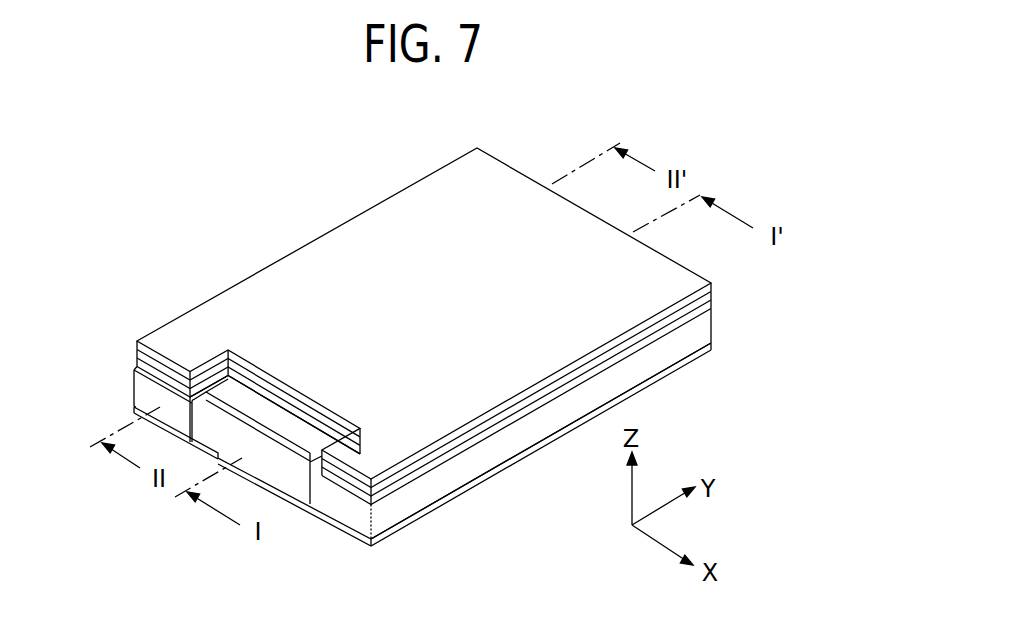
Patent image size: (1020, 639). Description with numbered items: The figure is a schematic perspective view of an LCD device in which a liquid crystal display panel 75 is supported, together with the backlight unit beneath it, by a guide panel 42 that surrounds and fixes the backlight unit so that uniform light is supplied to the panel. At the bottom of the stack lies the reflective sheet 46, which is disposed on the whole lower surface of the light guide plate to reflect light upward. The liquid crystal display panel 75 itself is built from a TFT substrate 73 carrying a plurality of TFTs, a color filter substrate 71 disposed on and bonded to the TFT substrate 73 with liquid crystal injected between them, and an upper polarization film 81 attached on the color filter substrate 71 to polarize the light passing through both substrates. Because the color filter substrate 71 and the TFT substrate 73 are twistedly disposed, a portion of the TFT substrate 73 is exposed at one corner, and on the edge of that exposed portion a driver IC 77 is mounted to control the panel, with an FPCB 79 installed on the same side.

The guide panel 42 is at (527, 428).
The reflective sheet 46 is at (455, 492).
The color filter substrate 71 is at (713, 292).
The TFT substrate 73 is at (713, 303).
The liquid crystal display panel 75 is at (478, 394).
The driver IC 77 is at (255, 398).
The FPCB 79 is at (225, 407).
The upper polarization film 81 is at (313, 260).